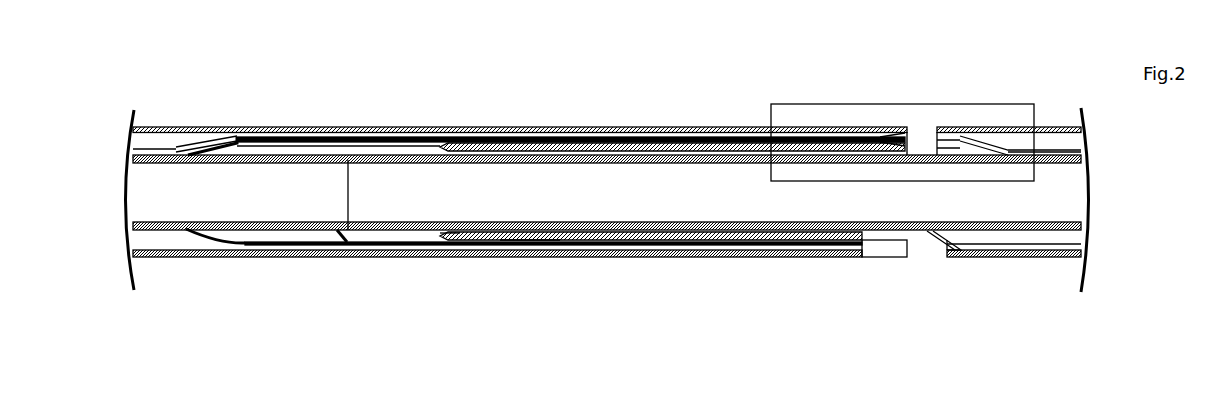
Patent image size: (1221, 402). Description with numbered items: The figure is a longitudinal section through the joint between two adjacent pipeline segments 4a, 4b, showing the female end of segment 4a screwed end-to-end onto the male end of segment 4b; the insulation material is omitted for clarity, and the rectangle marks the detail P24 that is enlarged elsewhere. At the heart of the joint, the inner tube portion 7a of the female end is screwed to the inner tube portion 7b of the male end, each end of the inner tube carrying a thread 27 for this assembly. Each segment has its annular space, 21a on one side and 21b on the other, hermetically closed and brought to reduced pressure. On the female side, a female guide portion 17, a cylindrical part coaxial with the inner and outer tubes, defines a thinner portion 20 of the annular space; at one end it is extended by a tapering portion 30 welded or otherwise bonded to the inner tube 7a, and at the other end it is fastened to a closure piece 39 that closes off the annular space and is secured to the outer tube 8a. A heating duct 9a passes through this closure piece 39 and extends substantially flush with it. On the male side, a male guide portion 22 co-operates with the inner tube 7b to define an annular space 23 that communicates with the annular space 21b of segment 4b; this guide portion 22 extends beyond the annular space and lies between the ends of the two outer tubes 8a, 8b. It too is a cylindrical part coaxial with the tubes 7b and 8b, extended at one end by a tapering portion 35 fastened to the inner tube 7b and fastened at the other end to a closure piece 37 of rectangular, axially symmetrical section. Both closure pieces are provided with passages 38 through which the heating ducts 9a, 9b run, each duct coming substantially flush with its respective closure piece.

The segment 4a is at (268, 84).
The segment 4b is at (1064, 92).
The inner tube portion 7a is at (267, 152).
The inner tube portion 7b is at (500, 230).
The outer tube 8a is at (763, 258).
The outer tube 8b is at (960, 262).
The heating duct 9a is at (875, 130).
The heating duct 9b is at (990, 130).
The female guide portion 17 is at (340, 148).
The annular space 20 is at (484, 128).
The annular space 21a is at (148, 140).
The annular space 21b is at (995, 258).
The male guide portion 22 is at (560, 233).
The annular space 23 is at (525, 234).
The thread 27 is at (350, 244).
The tapering portion 30 is at (214, 143).
The tapering portion 35 is at (452, 235).
The closure piece 37 is at (937, 242).
The passages 38 is at (950, 138).
The closure piece 39 is at (882, 258).
The detail P24 is at (770, 106).